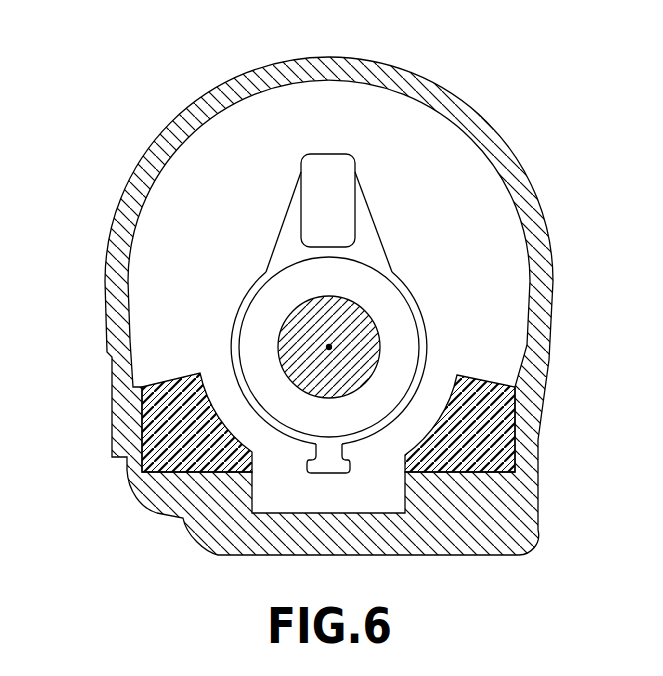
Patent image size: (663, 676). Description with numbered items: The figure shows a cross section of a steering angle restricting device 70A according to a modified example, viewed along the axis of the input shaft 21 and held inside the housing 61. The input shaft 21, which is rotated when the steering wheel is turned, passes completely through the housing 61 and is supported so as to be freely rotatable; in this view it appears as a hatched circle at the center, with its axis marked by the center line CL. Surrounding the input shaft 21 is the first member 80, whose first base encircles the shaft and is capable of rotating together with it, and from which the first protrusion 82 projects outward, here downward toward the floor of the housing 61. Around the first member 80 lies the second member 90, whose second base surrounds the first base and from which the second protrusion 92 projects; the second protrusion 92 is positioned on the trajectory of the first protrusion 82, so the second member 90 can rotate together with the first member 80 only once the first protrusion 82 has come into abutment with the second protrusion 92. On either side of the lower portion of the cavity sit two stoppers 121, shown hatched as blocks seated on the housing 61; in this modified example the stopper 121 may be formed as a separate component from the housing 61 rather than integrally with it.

The housing 61 is at (165, 125).
The steering angle restricting device 70A is at (245, 142).
The stopper 121 is at (165, 376).
The first member 80 is at (294, 263).
The second member 90 is at (378, 229).
The second protrusion 92 is at (326, 188).
The first protrusion 82 is at (324, 460).
The input shaft 21 is at (380, 340).
The center line CL is at (329, 347).